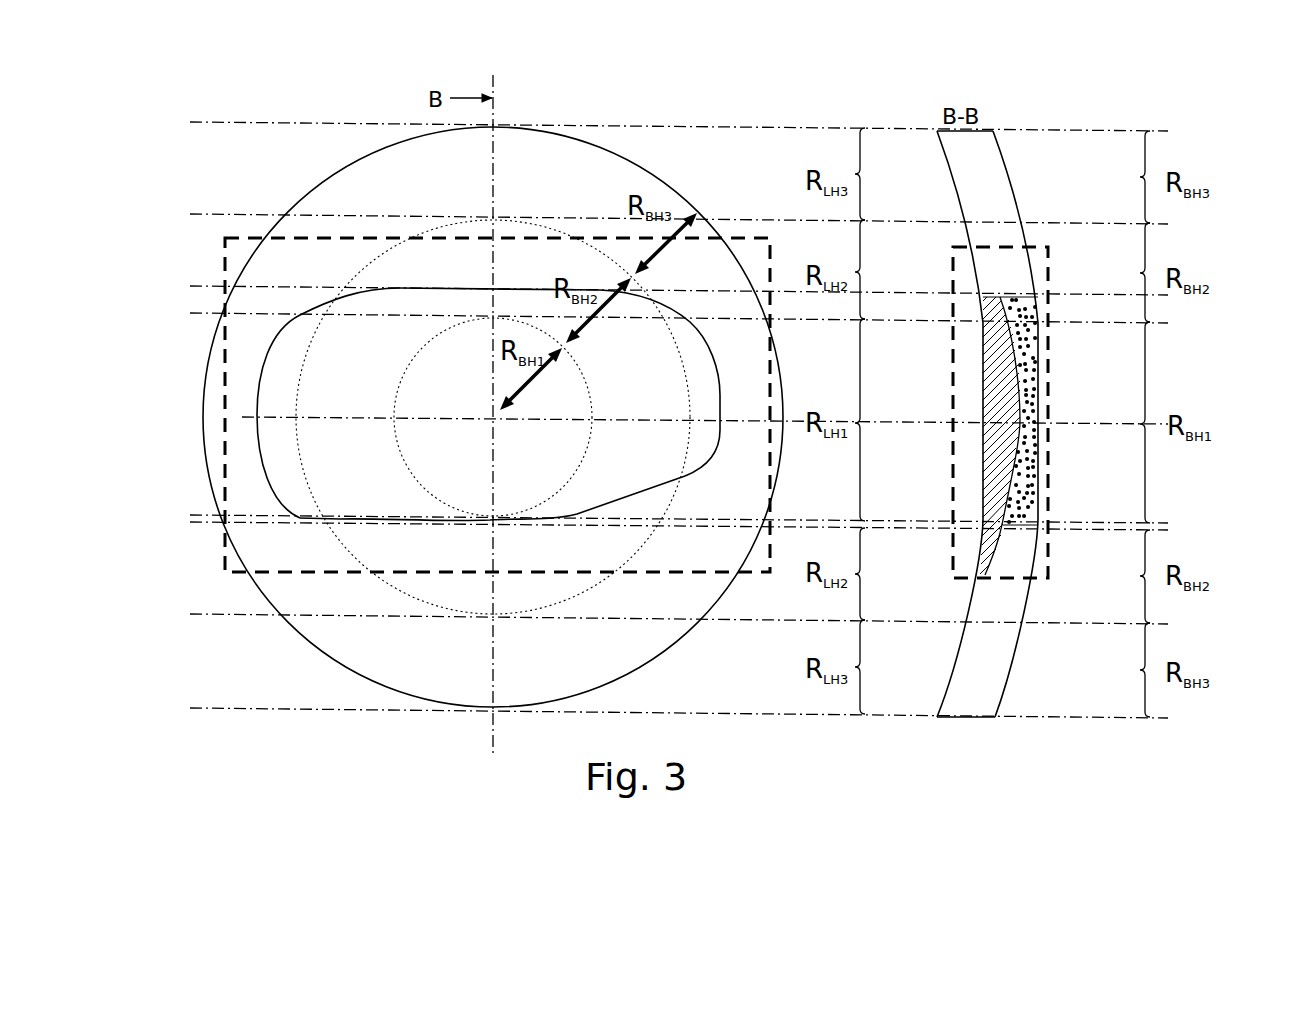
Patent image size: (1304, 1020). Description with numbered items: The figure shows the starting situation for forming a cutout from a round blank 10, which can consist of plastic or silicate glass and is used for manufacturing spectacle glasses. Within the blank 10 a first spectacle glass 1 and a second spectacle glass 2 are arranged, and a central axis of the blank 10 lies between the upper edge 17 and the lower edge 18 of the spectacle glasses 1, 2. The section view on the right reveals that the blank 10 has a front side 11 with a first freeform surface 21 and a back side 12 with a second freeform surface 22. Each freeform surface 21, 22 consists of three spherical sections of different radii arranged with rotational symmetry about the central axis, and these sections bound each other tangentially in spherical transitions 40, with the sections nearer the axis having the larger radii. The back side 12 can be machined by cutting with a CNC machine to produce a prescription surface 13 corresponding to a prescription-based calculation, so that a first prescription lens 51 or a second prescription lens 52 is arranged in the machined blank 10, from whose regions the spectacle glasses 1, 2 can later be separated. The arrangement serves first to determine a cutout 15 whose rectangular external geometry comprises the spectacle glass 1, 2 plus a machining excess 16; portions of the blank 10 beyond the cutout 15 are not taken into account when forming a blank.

The first spectacle glass 1 is at (715, 438).
The second spectacle glass 2 is at (332, 472).
The round blank 10 is at (656, 434).
The front side 11 is at (1051, 424).
The first freeform surface 21 is at (998, 140).
The back side 12 is at (909, 409).
The second freeform surface 22 is at (937, 143).
The prescription surface 13 is at (1020, 410).
The cutout 15 is at (235, 235).
The machining excess 16 is at (295, 250).
The upper edge 17 is at (473, 287).
The lower edge 18 is at (572, 508).
The spherical transitions 40 is at (592, 417).
The first prescription lens 51 is at (1126, 411).
The second prescription lens 52 is at (1040, 410).